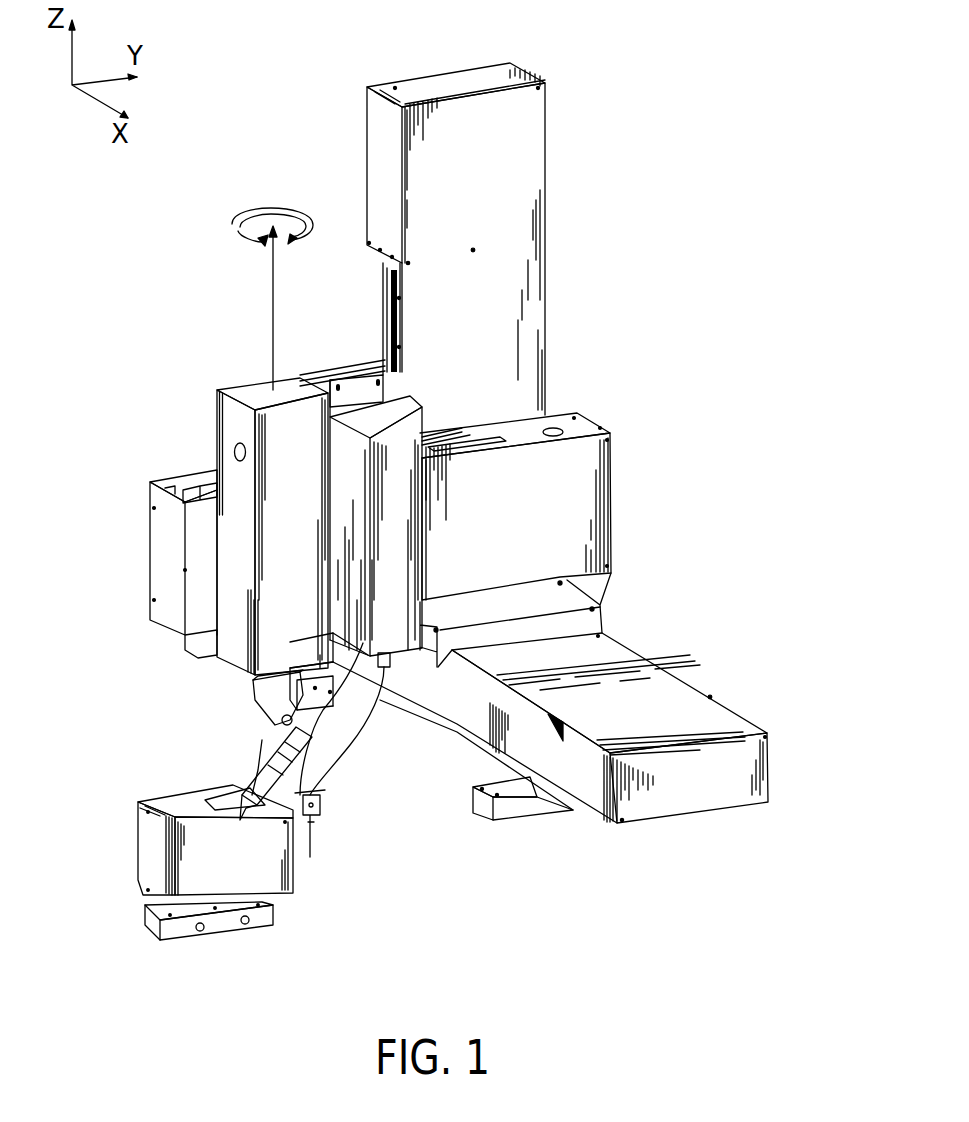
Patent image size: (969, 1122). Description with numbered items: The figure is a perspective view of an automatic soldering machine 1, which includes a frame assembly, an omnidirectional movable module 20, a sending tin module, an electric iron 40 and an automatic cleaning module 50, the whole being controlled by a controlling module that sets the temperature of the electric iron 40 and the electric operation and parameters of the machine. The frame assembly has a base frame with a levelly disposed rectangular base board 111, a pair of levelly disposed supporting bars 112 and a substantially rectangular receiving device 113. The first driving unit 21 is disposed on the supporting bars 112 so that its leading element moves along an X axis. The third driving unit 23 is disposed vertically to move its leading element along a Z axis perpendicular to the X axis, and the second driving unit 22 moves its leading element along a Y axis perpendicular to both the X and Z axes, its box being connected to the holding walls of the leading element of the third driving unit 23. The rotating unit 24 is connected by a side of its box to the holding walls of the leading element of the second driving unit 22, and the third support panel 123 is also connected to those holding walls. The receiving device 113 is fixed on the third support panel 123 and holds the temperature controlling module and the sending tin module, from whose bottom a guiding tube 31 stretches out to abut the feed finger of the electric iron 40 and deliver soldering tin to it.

The automatic soldering machine 1 is at (757, 29).
The omnidirectional movable module 20 is at (695, 240).
The first driving unit 21 is at (577, 655).
The second driving unit 22 is at (567, 497).
The third driving unit 23 is at (492, 273).
The rotating unit 24 is at (293, 483).
The guiding tube 31 is at (340, 743).
The electric iron 40 is at (246, 788).
The automatic cleaning module 50 is at (143, 861).
The rectangular base board 111 is at (148, 917).
The supporting bars 112 is at (398, 697).
The receiving device 113 is at (357, 412).
The third support panel 123 is at (322, 393).